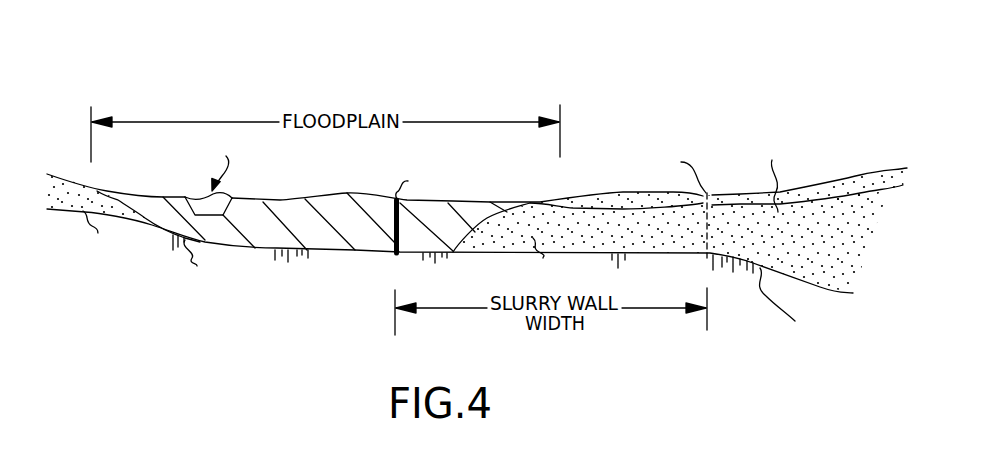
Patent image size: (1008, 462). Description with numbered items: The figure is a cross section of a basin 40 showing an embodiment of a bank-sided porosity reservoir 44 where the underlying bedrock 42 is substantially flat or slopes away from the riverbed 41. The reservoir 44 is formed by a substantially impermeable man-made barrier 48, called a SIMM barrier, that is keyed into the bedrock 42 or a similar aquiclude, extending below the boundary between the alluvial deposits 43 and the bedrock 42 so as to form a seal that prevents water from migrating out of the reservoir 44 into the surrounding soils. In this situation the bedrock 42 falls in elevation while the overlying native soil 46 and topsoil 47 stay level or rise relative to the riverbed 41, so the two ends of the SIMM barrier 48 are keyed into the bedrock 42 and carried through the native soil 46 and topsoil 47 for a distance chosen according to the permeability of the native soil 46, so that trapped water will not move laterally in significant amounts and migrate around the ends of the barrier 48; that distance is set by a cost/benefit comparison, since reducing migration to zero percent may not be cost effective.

The basin 40 is at (224, 61).
The riverbed 41 is at (200, 197).
The bedrock 42 is at (218, 316).
The alluvial deposits 43 is at (320, 252).
The bank-sided porosity reservoir 44 is at (445, 232).
The native soil 46 is at (107, 189).
The topsoil 47 is at (593, 198).
The substantially impermeable man-made barrier 48 is at (392, 257).